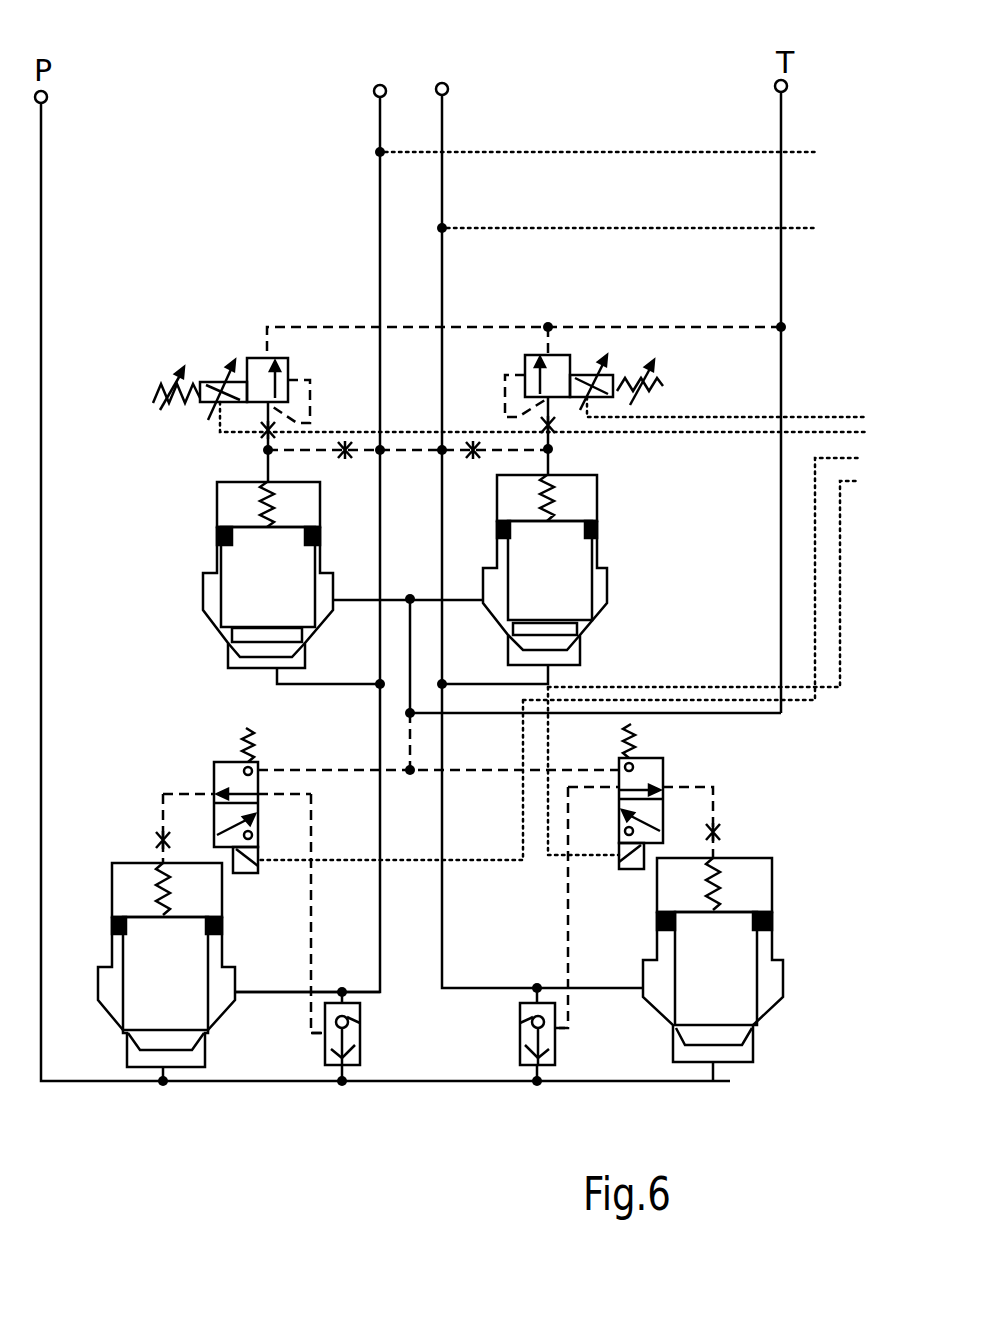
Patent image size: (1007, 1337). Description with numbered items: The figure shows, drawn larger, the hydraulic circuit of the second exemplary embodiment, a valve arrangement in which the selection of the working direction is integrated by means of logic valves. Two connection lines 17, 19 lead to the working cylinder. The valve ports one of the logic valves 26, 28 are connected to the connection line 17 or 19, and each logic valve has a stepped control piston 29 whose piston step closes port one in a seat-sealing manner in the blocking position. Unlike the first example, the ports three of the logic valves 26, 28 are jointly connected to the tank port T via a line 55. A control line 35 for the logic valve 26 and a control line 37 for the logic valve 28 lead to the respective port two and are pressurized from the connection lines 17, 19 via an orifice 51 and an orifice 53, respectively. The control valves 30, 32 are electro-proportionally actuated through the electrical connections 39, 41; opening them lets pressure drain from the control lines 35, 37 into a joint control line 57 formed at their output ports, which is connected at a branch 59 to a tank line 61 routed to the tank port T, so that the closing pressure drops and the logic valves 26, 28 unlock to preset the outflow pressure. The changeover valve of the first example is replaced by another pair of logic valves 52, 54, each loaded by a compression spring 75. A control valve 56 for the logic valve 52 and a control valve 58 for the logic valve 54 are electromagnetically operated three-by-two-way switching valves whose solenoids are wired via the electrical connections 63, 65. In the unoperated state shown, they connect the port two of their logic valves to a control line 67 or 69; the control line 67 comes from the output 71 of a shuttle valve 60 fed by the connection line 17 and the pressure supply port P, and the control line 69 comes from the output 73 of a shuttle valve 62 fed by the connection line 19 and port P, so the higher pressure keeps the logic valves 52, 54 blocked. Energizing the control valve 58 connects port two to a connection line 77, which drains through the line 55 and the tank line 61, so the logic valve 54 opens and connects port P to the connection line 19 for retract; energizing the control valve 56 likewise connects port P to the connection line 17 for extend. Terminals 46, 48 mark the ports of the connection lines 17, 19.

The connection line 17 is at (378, 258).
The connection line 19 is at (446, 193).
The logic valve 26 is at (218, 490).
The logic valve 28 is at (598, 490).
The control piston 29 is at (262, 563).
The control valve 30 is at (255, 356).
The control valve 32 is at (555, 355).
The control line 35 is at (343, 443).
The control line 37 is at (472, 443).
The electrical connection 39 is at (722, 435).
The electrical connection 41 is at (823, 414).
The first port 46 is at (378, 85).
The second port 48 is at (447, 82).
The orifice 51 is at (352, 458).
The orifice 53 is at (440, 446).
The line 55 is at (465, 717).
The control valve 56 is at (225, 762).
The joint control line 57 is at (468, 327).
The control valve 58 is at (663, 762).
The branch 59 is at (783, 323).
The shuttle valve 60 is at (358, 1025).
The tank line 61 is at (777, 603).
The shuttle valve 62 is at (522, 1025).
The electrical connection 63 is at (521, 800).
The electrical connection 65 is at (551, 745).
The control line 67 is at (313, 900).
The control line 69 is at (568, 918).
The output 71 is at (322, 1038).
The output 73 is at (557, 1030).
The compression spring 75 is at (160, 877).
The connection line 77 is at (333, 770).
The logic valve 52 is at (115, 862).
The logic valve 54 is at (773, 860).